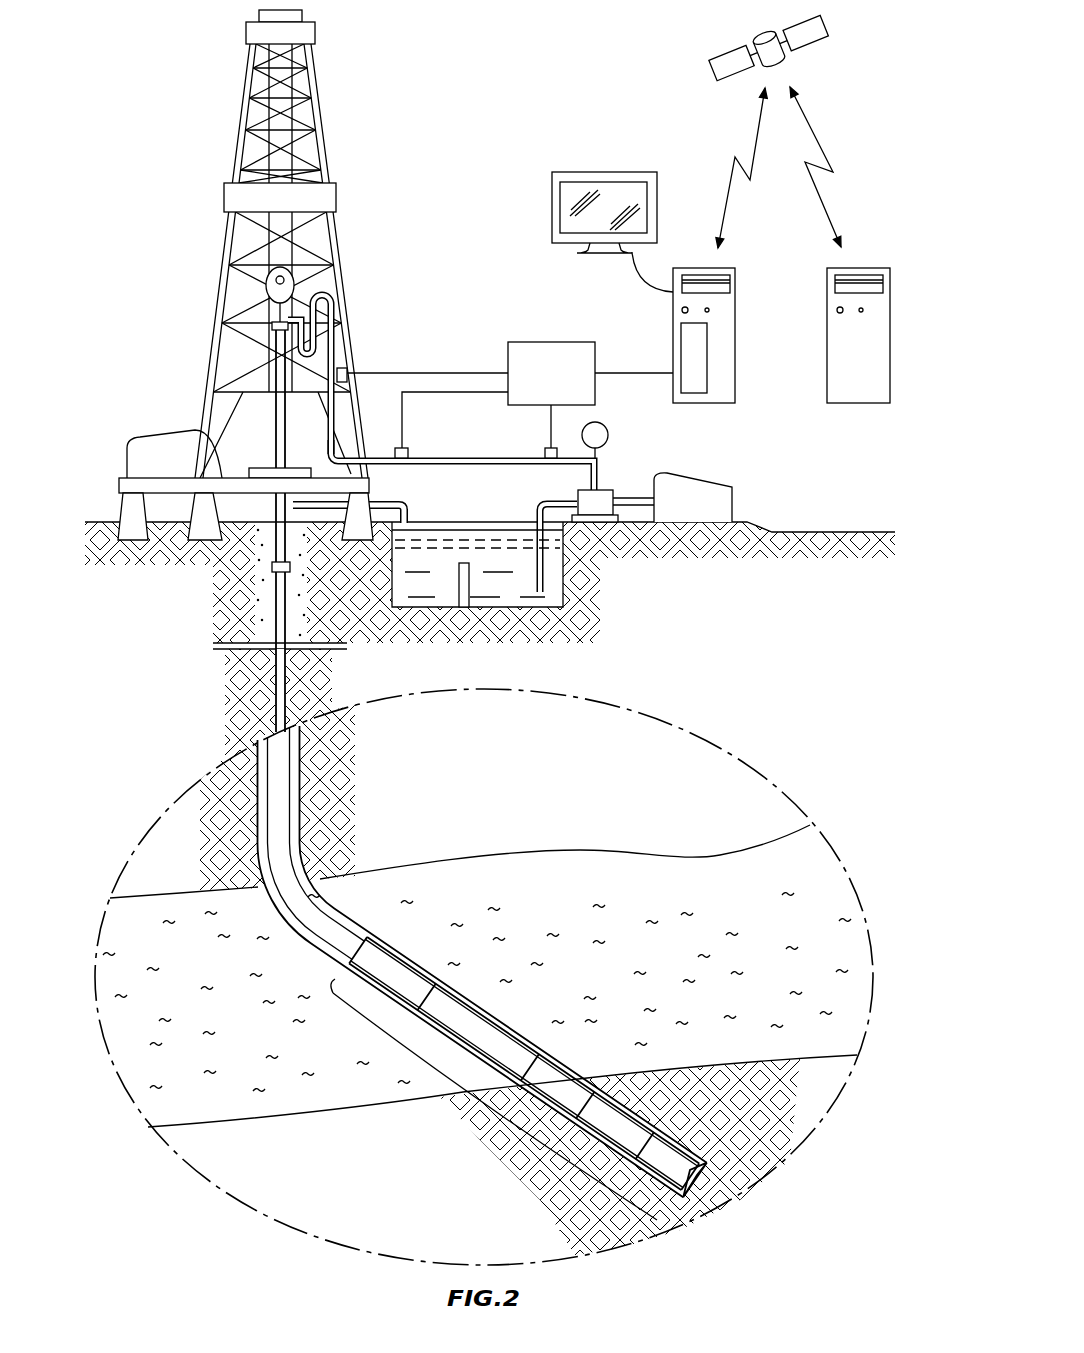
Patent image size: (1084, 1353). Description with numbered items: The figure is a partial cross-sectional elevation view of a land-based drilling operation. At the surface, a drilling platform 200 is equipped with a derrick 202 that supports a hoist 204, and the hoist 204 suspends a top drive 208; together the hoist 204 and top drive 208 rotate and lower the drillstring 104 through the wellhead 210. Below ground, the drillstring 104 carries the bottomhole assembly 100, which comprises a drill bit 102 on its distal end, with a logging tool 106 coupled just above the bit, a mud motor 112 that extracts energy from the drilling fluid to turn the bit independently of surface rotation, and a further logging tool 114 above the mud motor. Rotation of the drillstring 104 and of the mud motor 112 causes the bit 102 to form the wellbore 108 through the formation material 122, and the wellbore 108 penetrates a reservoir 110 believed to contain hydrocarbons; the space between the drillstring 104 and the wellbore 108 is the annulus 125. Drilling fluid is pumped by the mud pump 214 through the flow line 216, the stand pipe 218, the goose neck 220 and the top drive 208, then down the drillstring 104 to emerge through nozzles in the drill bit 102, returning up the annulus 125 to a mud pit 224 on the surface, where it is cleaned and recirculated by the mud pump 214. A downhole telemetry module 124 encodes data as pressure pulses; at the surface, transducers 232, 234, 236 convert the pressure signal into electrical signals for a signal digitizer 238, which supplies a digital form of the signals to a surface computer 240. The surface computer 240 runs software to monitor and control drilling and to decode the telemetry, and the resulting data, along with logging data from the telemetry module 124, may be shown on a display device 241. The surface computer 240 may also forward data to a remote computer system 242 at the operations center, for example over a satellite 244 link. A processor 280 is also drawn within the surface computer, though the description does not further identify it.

The bottomhole assembly 100 is at (490, 1113).
The drill bit 102 is at (688, 1147).
The drillstring 104 is at (335, 915).
The logging tool 106 is at (665, 1102).
The wellbore 108 is at (296, 771).
The reservoir 110 is at (733, 971).
The mud motor 112 is at (556, 1076).
The logging tool 114 is at (435, 998).
The formation material 122 is at (323, 750).
The telemetry module 124 is at (375, 962).
The annulus 125 is at (298, 835).
The drilling platform 200 is at (370, 485).
The derrick 202 is at (313, 62).
The hoist 204 is at (266, 277).
The top drive 208 is at (276, 340).
The wellhead 210 is at (270, 505).
The mud pump 214 is at (687, 477).
The flow line 216 is at (498, 466).
The stand pipe 218 is at (336, 336).
The goose neck 220 is at (335, 292).
The mud pit 224 is at (445, 537).
The transducer 232 is at (347, 370).
The transducer 234 is at (407, 449).
The transducer 236 is at (545, 450).
The signal digitizer 238 is at (554, 342).
The surface computer 240 is at (740, 308).
The display device 241 is at (615, 172).
The computer system 242 is at (865, 268).
The satellite 244 is at (757, 35).
The processor 280 is at (697, 342).